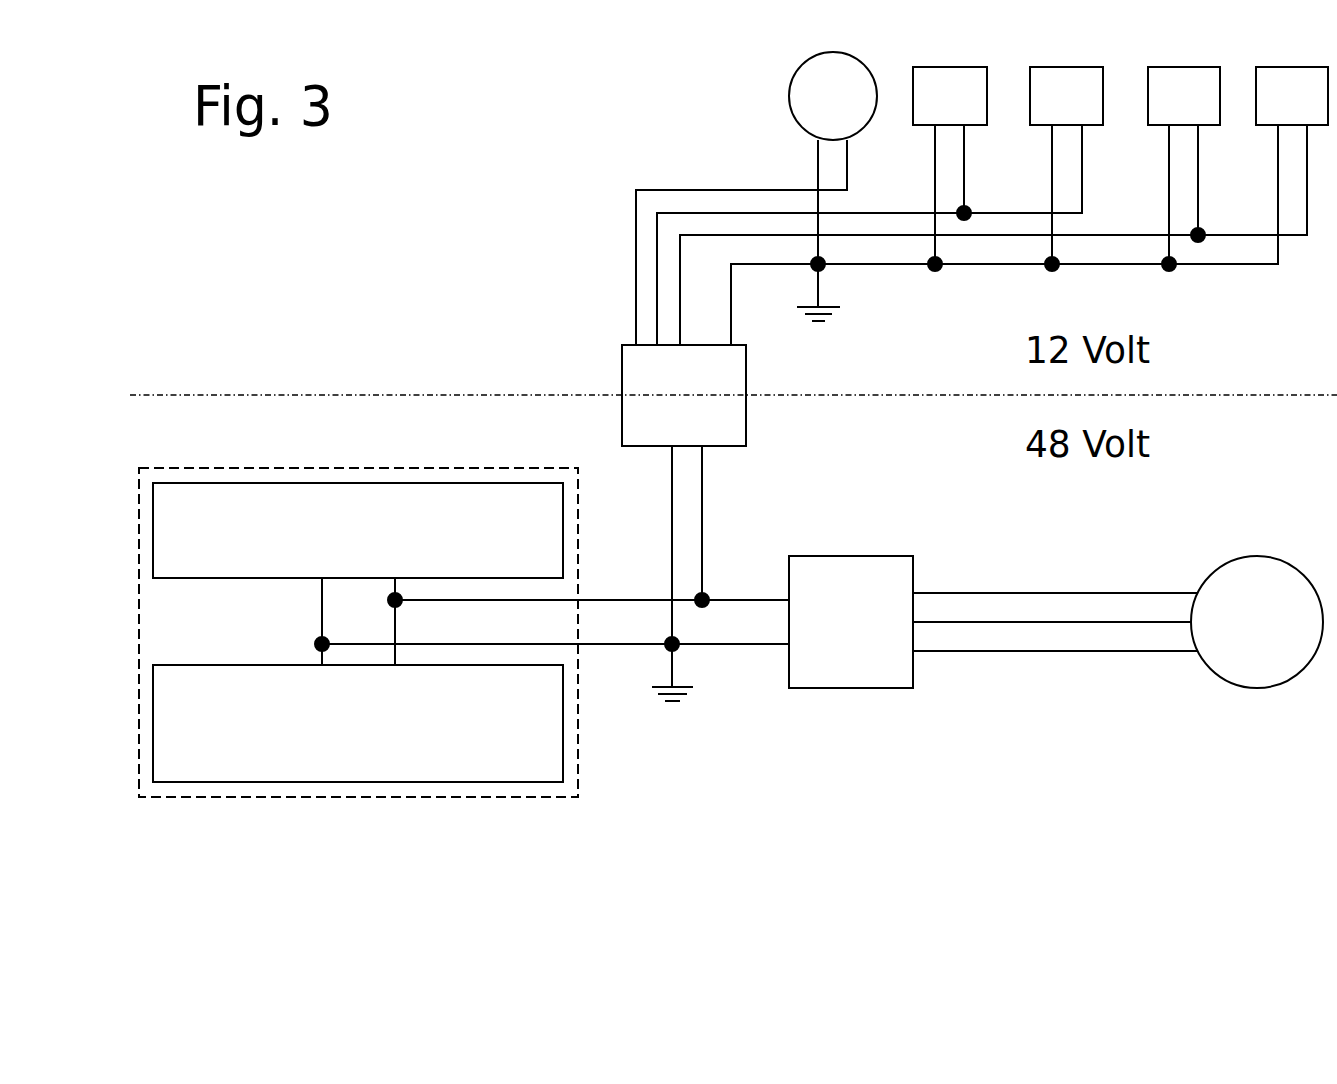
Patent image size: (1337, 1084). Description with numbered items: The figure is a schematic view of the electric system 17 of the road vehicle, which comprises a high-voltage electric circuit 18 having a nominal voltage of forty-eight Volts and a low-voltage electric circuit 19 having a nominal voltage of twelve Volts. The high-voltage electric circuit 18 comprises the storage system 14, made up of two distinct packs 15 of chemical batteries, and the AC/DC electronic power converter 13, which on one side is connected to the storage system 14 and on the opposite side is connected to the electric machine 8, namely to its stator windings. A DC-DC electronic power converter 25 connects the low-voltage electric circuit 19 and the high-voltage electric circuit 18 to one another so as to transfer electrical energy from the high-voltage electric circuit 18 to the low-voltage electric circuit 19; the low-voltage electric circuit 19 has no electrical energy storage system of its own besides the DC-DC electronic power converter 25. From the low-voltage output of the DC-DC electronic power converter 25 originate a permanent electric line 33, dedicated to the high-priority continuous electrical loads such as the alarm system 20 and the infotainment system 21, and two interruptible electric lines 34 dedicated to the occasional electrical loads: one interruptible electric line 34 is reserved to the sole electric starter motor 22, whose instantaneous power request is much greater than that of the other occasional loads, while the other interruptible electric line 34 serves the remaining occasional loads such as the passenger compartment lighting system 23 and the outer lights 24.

The electric machine 8 is at (1257, 622).
The AC/DC electronic power converter 13 is at (876, 666).
The storage system 14 is at (365, 694).
The pack of chemical batteries 15 is at (358, 632).
The electric system 17 is at (1122, 777).
The high-voltage electric circuit 18 is at (847, 828).
The low-voltage electric circuit 19 is at (583, 110).
The alarm system 20 is at (1292, 96).
The infotainment system 21 is at (1184, 165).
The electric starter motor 22 is at (833, 96).
The passenger compartment lighting system 23 is at (950, 165).
The outer lights 24 is at (1066, 165).
The DC-DC electronic power converter 25 is at (730, 425).
The permanent electric line 33 is at (1145, 225).
The interruptible electric line 34 is at (767, 175).